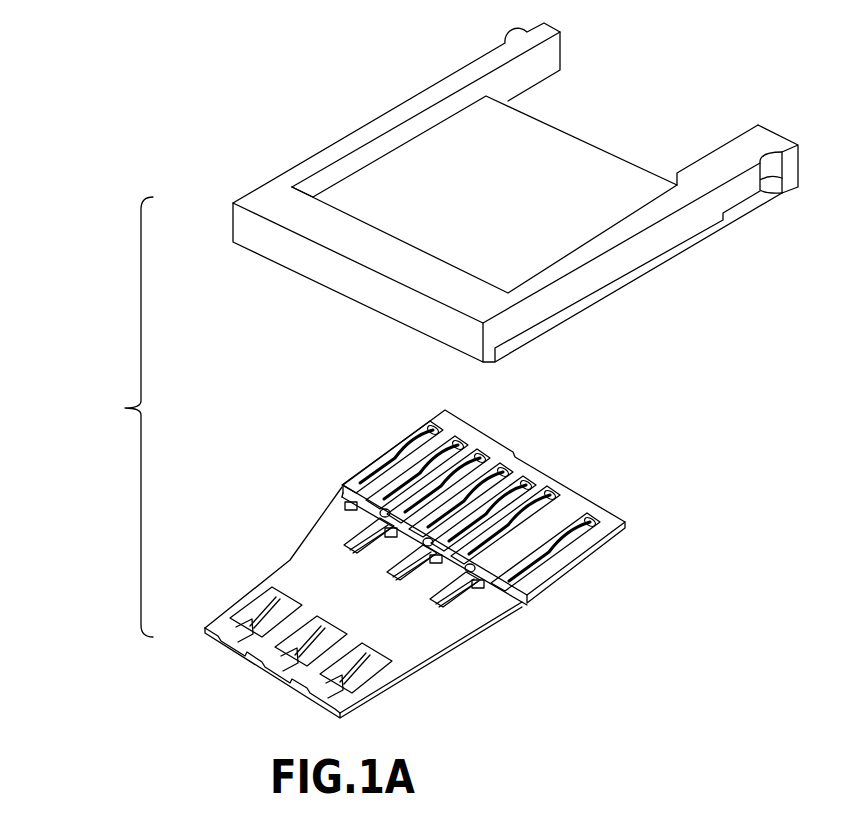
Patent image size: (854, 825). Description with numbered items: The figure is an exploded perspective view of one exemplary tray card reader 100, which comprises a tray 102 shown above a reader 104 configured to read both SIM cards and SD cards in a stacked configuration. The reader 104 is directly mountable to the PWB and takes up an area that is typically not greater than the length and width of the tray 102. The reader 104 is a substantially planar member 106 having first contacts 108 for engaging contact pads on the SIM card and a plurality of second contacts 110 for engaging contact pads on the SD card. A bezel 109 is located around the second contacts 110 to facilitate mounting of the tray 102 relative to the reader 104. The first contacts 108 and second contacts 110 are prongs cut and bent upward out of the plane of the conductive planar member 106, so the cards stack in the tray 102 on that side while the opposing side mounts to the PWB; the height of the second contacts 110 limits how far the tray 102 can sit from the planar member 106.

The tray card reader 100 is at (104, 404).
The tray 102 is at (312, 114).
The reader 104 is at (433, 563).
The planar member 106 is at (295, 556).
The first contacts 108 is at (362, 537).
The bezel 109 is at (607, 540).
The second contacts 110 is at (430, 432).